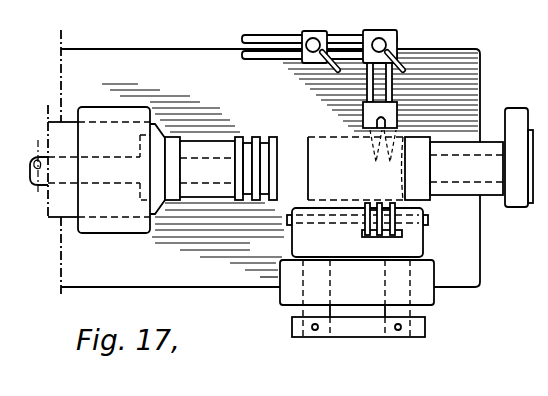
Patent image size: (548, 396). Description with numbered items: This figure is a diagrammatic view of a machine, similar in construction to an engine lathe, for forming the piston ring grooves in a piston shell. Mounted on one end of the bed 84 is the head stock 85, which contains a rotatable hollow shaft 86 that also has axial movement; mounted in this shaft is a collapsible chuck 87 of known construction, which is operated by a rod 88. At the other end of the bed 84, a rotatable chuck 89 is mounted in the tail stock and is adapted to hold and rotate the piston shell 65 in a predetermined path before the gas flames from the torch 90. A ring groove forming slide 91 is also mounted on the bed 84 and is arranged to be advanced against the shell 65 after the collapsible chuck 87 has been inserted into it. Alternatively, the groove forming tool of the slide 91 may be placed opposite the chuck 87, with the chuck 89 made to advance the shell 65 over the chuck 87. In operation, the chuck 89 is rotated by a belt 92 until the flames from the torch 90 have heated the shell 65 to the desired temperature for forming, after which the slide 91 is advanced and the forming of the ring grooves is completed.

The bed 84 is at (144, 65).
The head stock 85 is at (121, 226).
The rotatable hollow shaft 86 is at (65, 204).
The collapsible chuck 87 is at (200, 190).
The rod 88 is at (32, 161).
The rotatable chuck 89 is at (415, 144).
The torch 90 is at (308, 65).
The ring groove forming slide 91 is at (300, 241).
The belt 92 is at (515, 118).
The piston shell 65 is at (318, 178).